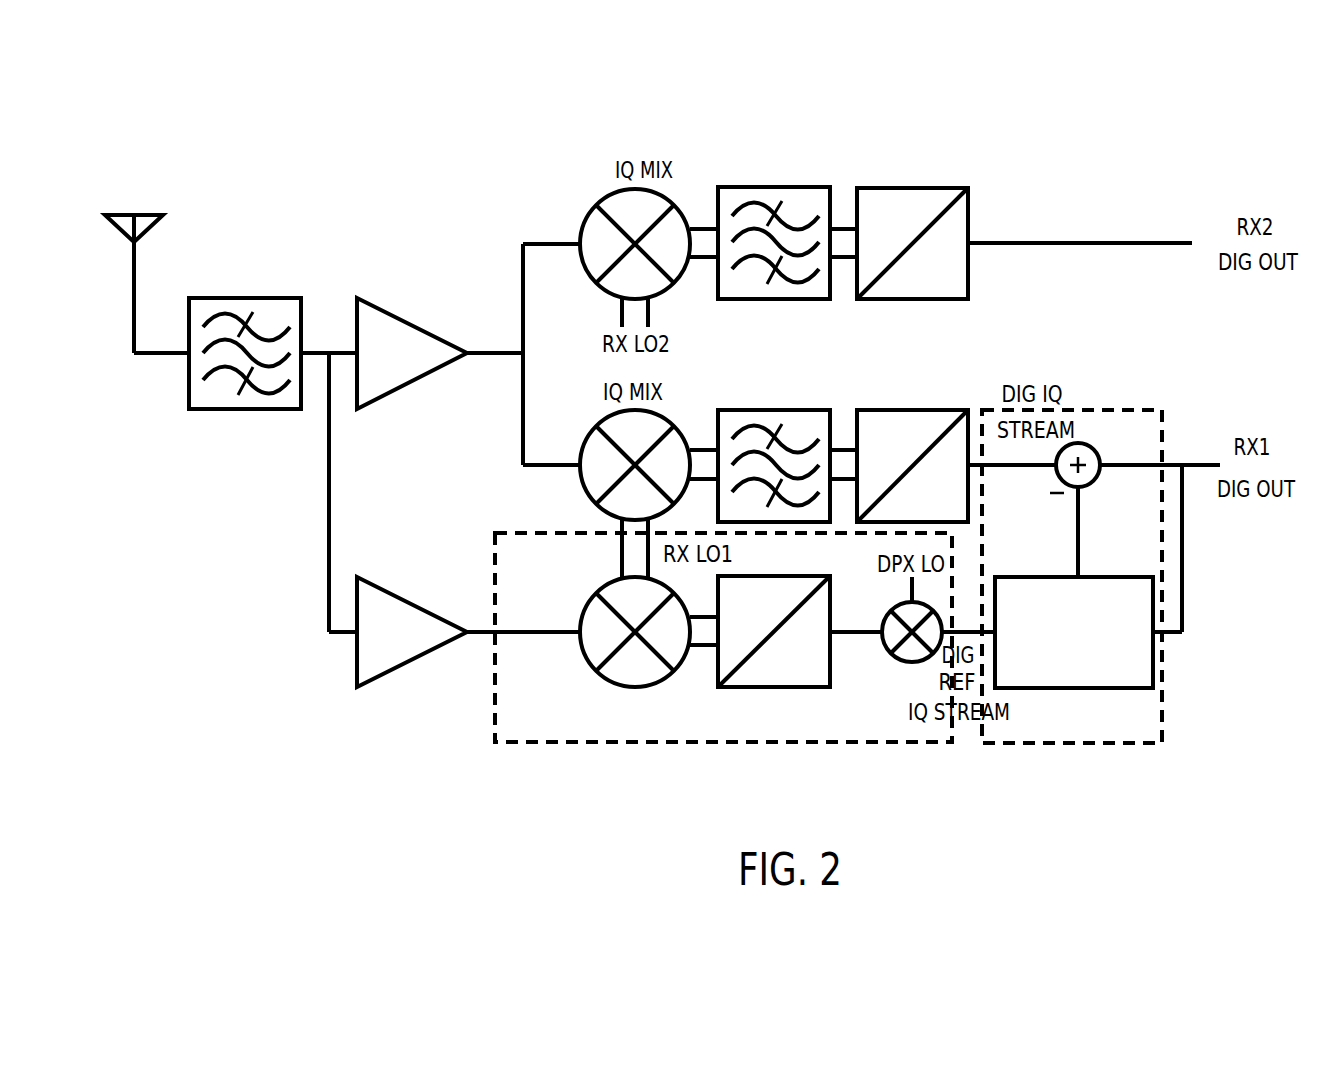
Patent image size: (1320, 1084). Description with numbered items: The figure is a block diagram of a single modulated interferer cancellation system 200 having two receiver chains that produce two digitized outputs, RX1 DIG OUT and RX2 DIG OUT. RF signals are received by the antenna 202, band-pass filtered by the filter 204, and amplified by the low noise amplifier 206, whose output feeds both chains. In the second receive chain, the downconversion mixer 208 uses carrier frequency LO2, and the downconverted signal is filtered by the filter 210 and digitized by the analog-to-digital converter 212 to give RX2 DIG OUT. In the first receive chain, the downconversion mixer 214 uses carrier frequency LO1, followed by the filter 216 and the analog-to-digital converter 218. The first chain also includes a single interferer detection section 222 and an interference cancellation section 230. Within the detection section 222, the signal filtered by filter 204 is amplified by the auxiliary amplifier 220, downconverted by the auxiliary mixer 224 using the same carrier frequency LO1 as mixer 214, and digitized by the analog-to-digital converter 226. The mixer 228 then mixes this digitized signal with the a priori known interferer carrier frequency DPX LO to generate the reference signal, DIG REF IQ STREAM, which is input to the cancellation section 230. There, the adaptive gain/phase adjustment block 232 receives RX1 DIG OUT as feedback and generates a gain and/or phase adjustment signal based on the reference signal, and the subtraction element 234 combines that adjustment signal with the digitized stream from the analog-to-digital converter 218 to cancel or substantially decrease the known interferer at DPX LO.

The interferer cancellation system 200 is at (1216, 159).
The antenna 202 is at (140, 213).
The filter 204 is at (192, 299).
The low noise amplifier 206 is at (362, 306).
The downconversion mixer 208 is at (596, 205).
The filter 210 is at (718, 188).
The analog-to-digital converter 212 is at (862, 188).
The downconversion mixer 214 is at (596, 428).
The filter 216 is at (722, 408).
The analog-to-digital converter 218 is at (864, 408).
The auxiliary amplifier 220 is at (359, 578).
The single interferer detection section 222 is at (503, 747).
The auxiliary mixer 224 is at (594, 595).
The analog-to-digital converter 226 is at (752, 577).
The mixer 228 is at (897, 660).
The interference cancellation section 230 is at (1163, 720).
The adaptive gain/phase adjustment block 232 is at (1093, 691).
The subtraction element 234 is at (1094, 483).